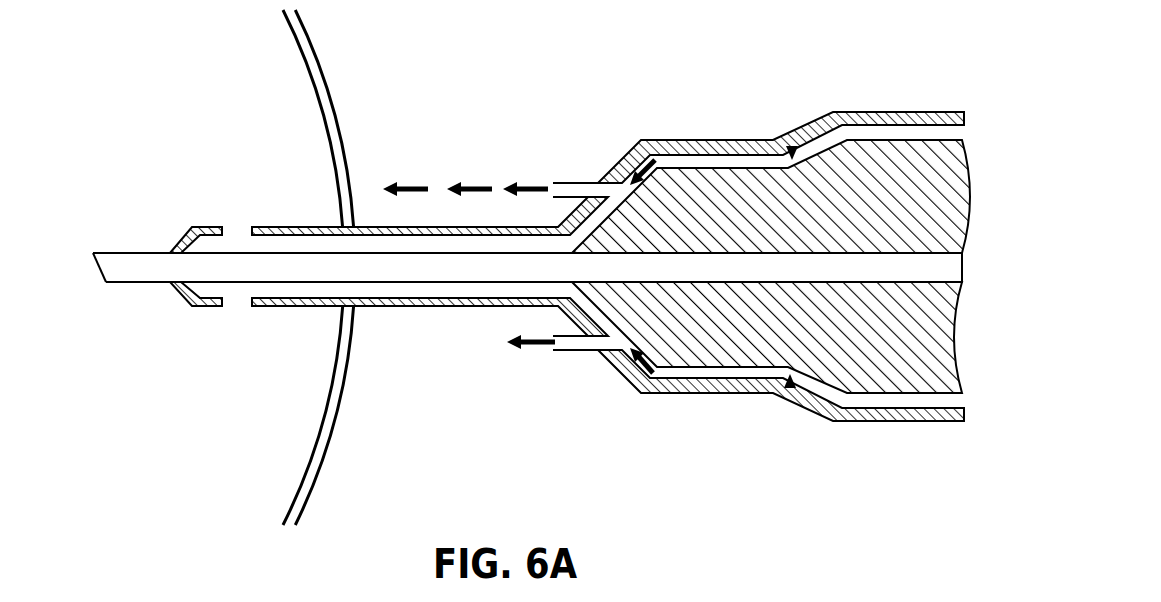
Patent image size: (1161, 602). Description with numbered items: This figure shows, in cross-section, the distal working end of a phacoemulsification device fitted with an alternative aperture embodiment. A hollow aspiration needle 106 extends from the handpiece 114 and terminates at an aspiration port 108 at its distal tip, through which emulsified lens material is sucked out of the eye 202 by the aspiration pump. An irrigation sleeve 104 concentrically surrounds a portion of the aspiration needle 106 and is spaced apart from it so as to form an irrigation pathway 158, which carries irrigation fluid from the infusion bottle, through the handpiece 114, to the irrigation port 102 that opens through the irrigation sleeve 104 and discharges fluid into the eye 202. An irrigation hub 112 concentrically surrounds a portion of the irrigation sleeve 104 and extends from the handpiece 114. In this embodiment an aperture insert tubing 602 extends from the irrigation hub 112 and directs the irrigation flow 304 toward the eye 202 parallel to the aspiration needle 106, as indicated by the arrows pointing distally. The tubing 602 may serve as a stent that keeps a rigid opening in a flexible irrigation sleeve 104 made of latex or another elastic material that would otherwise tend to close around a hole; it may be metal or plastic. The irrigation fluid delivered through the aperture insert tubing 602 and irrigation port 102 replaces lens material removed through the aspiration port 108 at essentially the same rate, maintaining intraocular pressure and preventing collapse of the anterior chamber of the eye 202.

The irrigation port 102 is at (237, 340).
The irrigation sleeve 104 is at (488, 307).
The aspiration needle 106 is at (135, 252).
The aspiration port 108 is at (82, 292).
The irrigation hub 112 is at (617, 368).
The handpiece 114 is at (937, 110).
The irrigation pathway 158 is at (792, 148).
The eye 202 is at (352, 160).
The irrigation flow 304 is at (527, 186).
The aperture insert tubing 602 is at (590, 182).